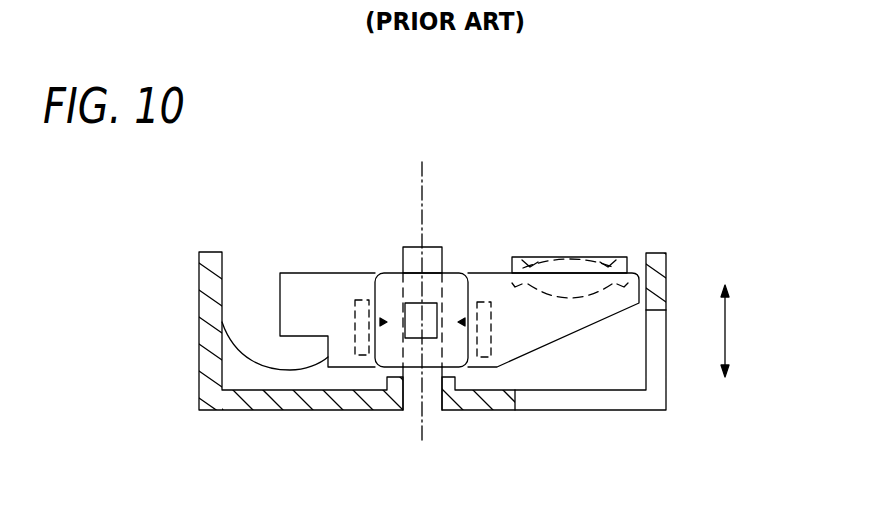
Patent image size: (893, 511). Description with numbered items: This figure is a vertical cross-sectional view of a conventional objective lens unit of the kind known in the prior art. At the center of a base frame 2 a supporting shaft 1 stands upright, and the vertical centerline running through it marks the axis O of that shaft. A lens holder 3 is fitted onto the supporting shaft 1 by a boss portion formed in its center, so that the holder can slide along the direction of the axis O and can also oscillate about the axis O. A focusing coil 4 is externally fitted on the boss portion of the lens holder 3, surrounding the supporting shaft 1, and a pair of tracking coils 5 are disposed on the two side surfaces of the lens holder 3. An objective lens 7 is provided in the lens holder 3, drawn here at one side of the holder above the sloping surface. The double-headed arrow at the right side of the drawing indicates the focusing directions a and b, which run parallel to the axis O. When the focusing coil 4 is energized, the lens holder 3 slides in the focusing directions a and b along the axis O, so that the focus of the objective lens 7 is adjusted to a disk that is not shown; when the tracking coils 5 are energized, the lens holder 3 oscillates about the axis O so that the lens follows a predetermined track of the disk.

The supporting shaft 1 is at (412, 248).
The base frame 2 is at (246, 400).
The lens holder 3 is at (302, 273).
The focusing coil 4 is at (358, 277).
The tracking coil 5 is at (455, 275).
The objective lens 7 is at (570, 258).
The axis O is at (422, 182).
The focusing direction a is at (735, 324).
The focusing direction b is at (735, 371).